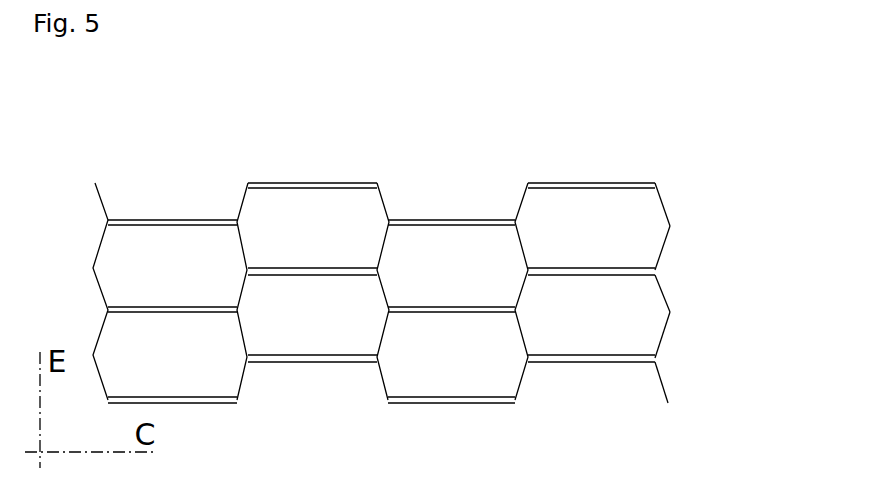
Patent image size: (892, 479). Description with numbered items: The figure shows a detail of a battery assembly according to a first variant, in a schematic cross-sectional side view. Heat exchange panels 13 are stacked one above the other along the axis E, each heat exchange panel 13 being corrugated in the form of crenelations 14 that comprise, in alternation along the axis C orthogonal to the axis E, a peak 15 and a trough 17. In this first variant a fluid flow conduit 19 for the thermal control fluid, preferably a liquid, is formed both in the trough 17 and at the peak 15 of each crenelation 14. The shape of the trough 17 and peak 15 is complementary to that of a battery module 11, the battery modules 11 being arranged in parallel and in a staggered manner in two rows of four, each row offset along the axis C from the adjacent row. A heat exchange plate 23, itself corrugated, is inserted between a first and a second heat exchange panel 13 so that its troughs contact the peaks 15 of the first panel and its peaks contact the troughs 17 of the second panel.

The battery module 11 is at (378, 291).
The heat exchange panel 13 is at (663, 202).
The crenelation 14 is at (268, 93).
The peak 15 is at (317, 186).
The trough 17 is at (187, 218).
The fluid flow conduit 19 is at (482, 220).
The heat exchange plate 23 is at (660, 255).